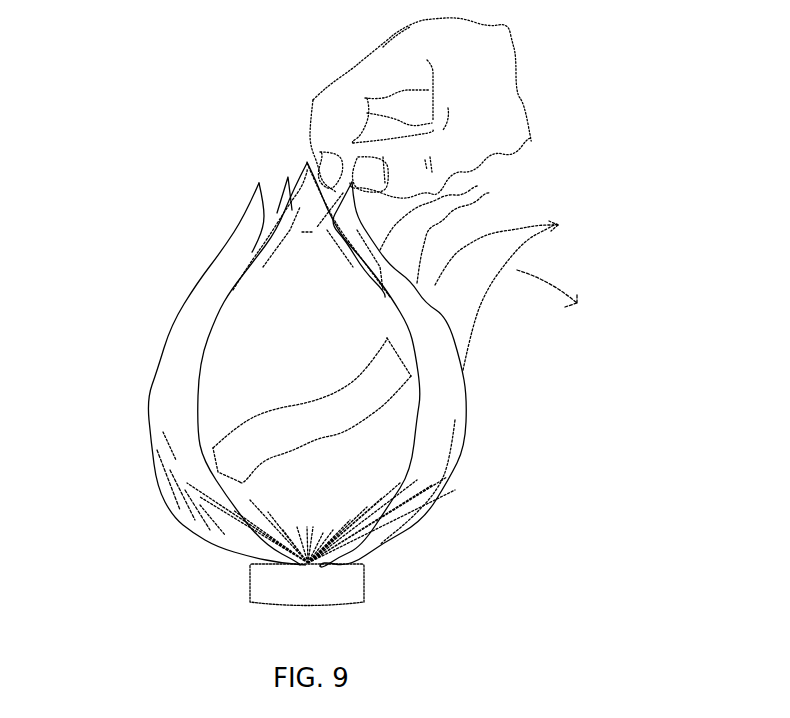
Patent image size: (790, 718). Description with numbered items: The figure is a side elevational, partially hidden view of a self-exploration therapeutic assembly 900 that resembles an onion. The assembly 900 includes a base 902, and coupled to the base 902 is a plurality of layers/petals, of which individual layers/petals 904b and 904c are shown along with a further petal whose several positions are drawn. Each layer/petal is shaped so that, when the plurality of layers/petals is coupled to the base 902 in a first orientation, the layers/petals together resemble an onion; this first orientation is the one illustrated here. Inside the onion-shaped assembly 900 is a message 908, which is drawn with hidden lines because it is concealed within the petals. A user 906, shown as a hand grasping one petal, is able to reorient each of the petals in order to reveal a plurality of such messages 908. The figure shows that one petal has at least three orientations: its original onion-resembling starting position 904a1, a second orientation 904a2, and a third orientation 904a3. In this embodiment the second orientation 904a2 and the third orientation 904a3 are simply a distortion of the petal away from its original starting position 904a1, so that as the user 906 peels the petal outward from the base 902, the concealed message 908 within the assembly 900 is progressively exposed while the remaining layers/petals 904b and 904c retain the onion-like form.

The self-exploration therapeutic assembly 900 is at (335, 650).
The base 902 is at (367, 582).
The first orientation of petal 904a1 is at (450, 418).
The second orientation of petal 904a2 is at (420, 222).
The third orientation of petal 904a3 is at (515, 238).
The layer/petal 904b is at (248, 323).
The layer/petal 904c is at (172, 407).
The user 906 is at (473, 72).
The message 908 is at (242, 455).